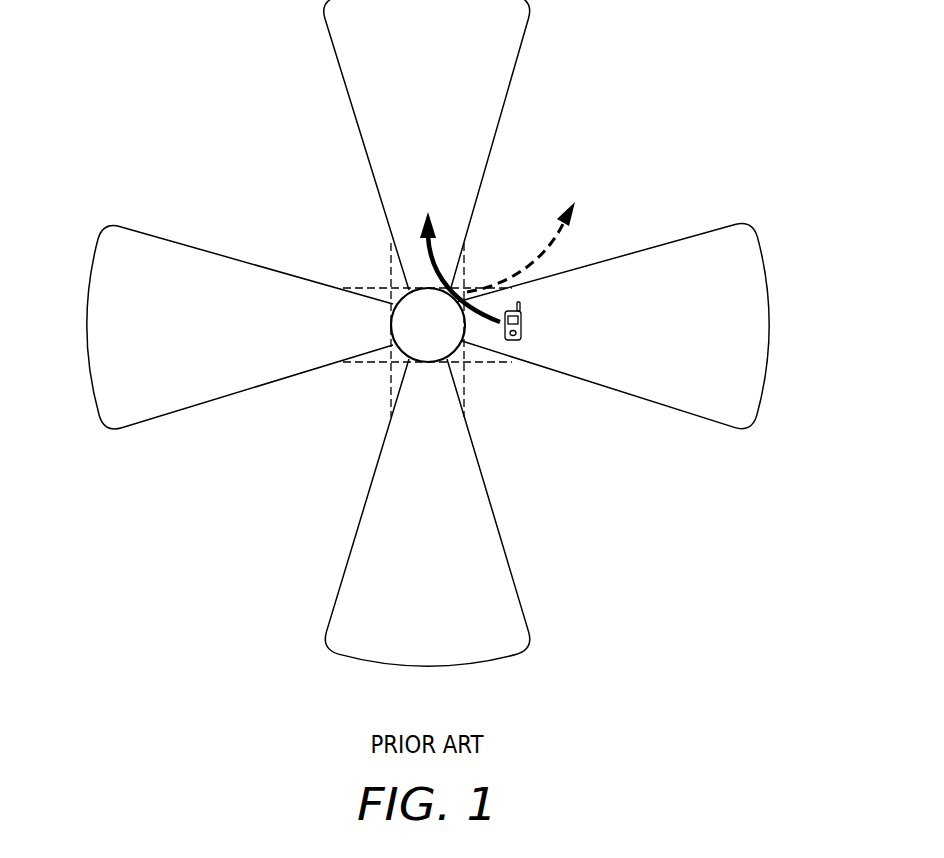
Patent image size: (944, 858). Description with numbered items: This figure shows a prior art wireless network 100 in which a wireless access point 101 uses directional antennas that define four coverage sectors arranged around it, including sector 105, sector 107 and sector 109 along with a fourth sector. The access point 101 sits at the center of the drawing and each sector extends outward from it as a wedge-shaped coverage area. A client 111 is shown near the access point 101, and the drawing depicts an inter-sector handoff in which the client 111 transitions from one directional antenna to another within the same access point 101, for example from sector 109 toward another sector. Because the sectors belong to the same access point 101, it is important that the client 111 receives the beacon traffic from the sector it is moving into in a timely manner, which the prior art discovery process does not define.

The wireless network 100 is at (748, 649).
The wireless access point 101 is at (391, 325).
The sector 105 is at (126, 225).
The sector 107 is at (518, 593).
The sector 109 is at (729, 224).
The client 111 is at (522, 323).